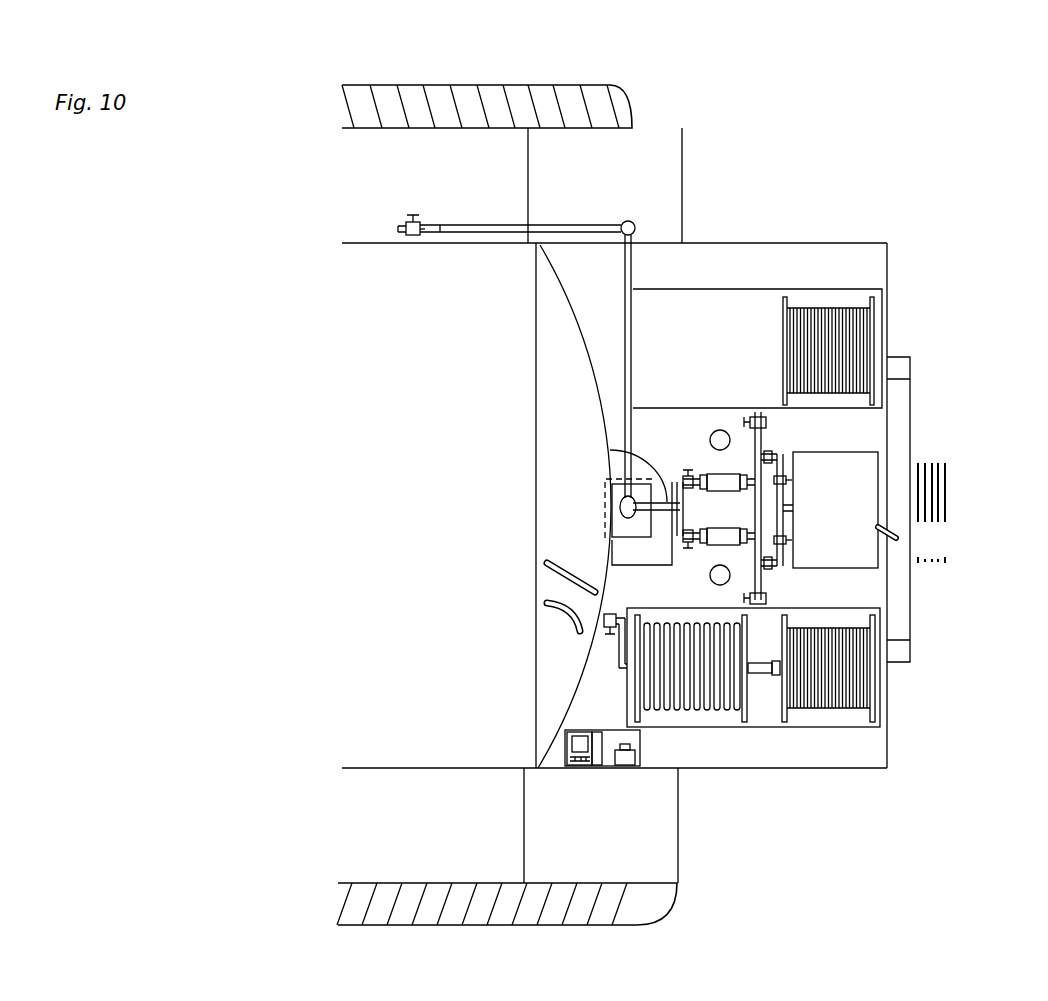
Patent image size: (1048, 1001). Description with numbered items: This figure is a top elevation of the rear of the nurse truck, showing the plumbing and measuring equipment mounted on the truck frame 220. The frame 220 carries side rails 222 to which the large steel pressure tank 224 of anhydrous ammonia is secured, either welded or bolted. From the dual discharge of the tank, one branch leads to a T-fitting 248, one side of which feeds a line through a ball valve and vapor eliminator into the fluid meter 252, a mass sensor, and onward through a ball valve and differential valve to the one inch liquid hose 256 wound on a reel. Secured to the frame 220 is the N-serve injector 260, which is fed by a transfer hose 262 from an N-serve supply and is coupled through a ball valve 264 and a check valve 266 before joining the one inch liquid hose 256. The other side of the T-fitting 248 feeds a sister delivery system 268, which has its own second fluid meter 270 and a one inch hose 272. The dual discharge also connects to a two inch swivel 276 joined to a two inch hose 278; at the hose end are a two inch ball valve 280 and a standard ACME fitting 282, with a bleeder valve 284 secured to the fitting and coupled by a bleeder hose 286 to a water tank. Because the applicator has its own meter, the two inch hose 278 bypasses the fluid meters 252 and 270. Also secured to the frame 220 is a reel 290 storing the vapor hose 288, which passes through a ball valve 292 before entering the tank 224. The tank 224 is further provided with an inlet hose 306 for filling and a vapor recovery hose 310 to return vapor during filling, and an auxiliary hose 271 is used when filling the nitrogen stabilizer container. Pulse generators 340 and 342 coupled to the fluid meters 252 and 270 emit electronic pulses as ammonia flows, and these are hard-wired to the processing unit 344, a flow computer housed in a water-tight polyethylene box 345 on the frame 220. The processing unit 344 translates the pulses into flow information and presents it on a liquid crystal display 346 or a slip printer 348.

The frame 220 is at (558, 124).
The side rails 222 is at (648, 140).
The pressure tank 224 is at (529, 506).
The T-fitting 248 is at (640, 456).
The fluid meter 252 is at (700, 545).
The liquid hose 256 is at (836, 715).
The N-serve injector 260 is at (835, 510).
The transfer hose 262 is at (896, 538).
The ball valve 264 is at (782, 563).
The check valve 266 is at (767, 563).
The sister delivery system 268 is at (700, 425).
The second fluid meter 270 is at (720, 475).
The auxiliary hose 271 is at (948, 480).
The hose 272 is at (811, 308).
The two inch swivel 276 is at (637, 227).
The two inch hose 278 is at (552, 226).
The ball valve 280 is at (412, 220).
The ACME fitting 282 is at (398, 229).
The bleeder valve 284 is at (409, 222).
The bleeder hose 286 is at (441, 240).
The vapor hose 288 is at (700, 707).
The reel 290 is at (640, 716).
The ball valve 292 is at (608, 636).
The inlet hose 306 is at (545, 564).
The vapor recovery hose 310 is at (545, 604).
The pulse generator 340 is at (737, 543).
The pulse generator 342 is at (740, 477).
The processing unit 344 is at (598, 768).
The water-tight box 345 is at (597, 733).
The liquid crystal display 346 is at (567, 740).
The slip printer 348 is at (612, 768).